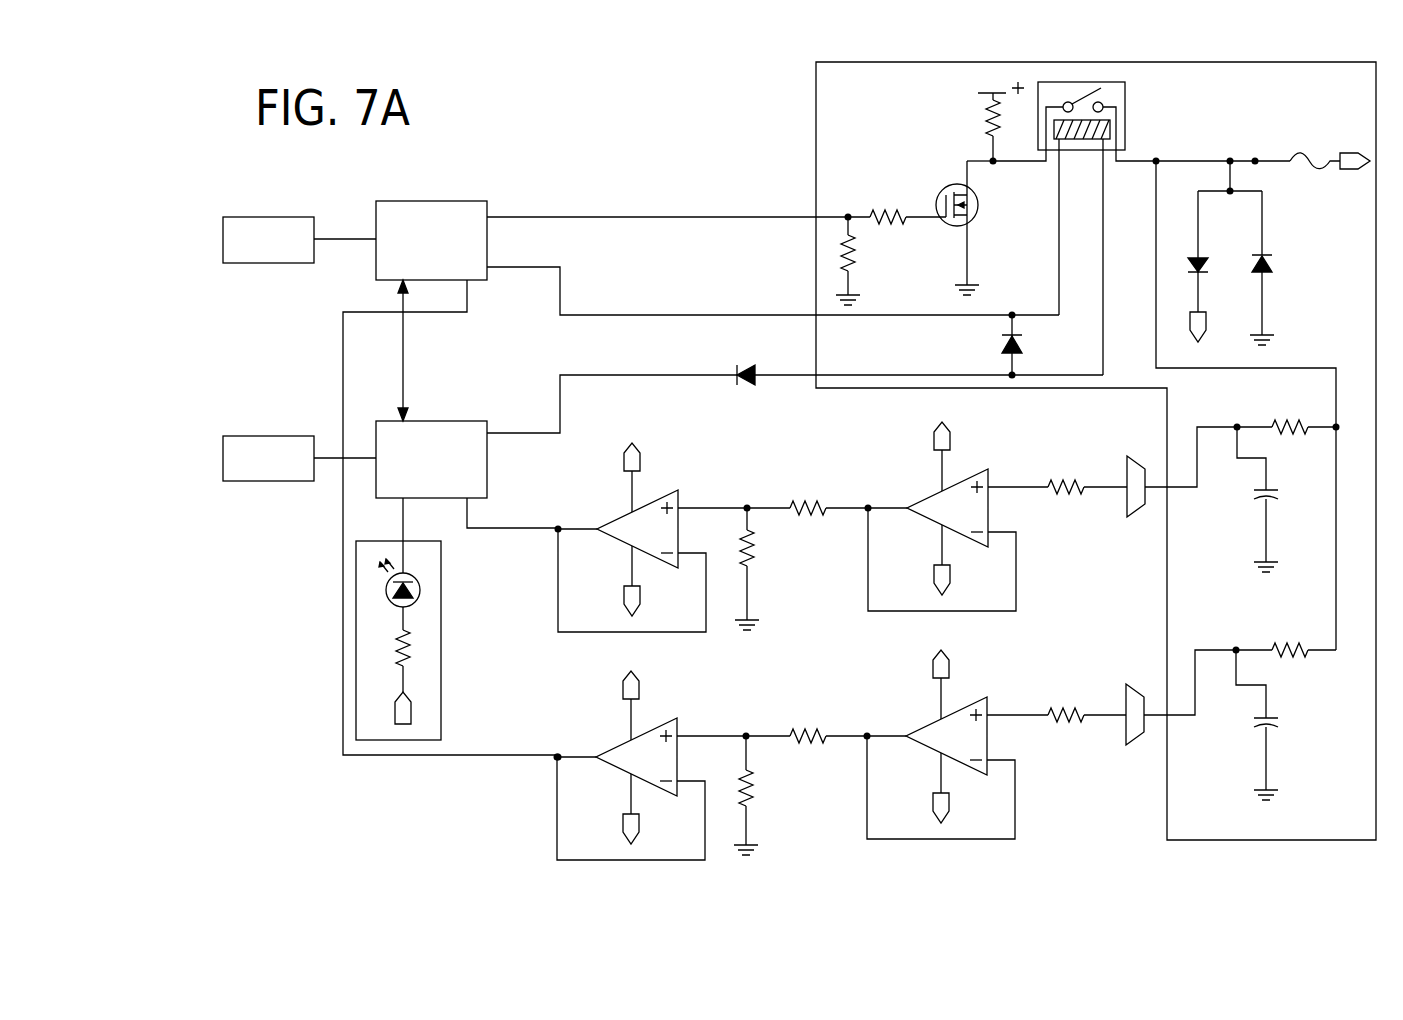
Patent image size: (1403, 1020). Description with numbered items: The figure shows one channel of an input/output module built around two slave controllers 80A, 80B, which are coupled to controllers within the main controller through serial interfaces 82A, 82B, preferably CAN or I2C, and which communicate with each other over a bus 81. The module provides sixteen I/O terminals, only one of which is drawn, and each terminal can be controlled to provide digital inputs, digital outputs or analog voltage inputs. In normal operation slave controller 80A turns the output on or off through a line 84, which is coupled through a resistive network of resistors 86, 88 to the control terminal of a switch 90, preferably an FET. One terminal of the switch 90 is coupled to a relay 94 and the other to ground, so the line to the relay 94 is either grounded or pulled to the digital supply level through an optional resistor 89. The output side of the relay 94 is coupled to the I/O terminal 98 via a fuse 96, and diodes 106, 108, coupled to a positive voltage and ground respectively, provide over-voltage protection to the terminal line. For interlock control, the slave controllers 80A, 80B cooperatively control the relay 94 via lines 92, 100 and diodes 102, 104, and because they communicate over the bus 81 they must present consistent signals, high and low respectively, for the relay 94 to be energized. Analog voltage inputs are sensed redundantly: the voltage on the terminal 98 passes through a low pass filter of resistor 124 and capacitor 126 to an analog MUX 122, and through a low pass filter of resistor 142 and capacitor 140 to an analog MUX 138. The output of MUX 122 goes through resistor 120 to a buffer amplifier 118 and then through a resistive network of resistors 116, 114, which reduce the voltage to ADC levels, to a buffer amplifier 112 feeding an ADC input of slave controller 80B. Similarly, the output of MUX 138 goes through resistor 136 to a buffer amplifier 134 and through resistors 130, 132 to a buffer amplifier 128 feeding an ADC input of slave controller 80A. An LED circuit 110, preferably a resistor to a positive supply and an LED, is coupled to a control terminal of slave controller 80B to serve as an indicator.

The slave controller 80A is at (440, 201).
The slave controller 80B is at (440, 421).
The bus 81 is at (403, 340).
The interface 82A is at (270, 263).
The interface 82B is at (270, 481).
The line 84 is at (598, 216).
The resistor 86 is at (887, 210).
The resistor 88 is at (855, 258).
The resistor 89 is at (993, 125).
The switch 90 is at (978, 203).
The line 92 is at (598, 314).
The relay 94 is at (1125, 97).
The fuse 96 is at (1303, 152).
The I/O terminal 98 is at (1355, 152).
The line 100 is at (598, 375).
The diode 102 is at (745, 388).
The diode 104 is at (1024, 345).
The diode 106 is at (1210, 265).
The diode 108 is at (1250, 265).
The LED circuit 110 is at (441, 690).
The buffer amplifier 112 is at (678, 497).
The resistor 114 is at (757, 560).
The resistor 116 is at (797, 500).
The buffer amplifier 118 is at (988, 476).
The resistor 120 is at (1063, 495).
The analog MUX 122 is at (1133, 518).
The resistor 124 is at (1290, 423).
The capacitor 126 is at (1278, 492).
The buffer amplifier 128 is at (677, 724).
The resistor 130 is at (756, 790).
The resistor 132 is at (797, 728).
The buffer amplifier 134 is at (987, 702).
The resistor 136 is at (1063, 722).
The analog MUX 138 is at (1133, 746).
The capacitor 140 is at (1278, 716).
The resistor 142 is at (1290, 646).